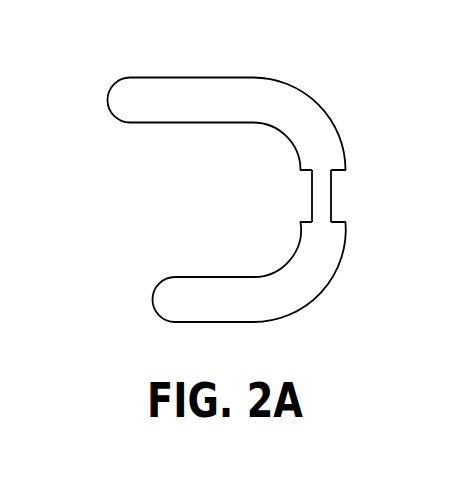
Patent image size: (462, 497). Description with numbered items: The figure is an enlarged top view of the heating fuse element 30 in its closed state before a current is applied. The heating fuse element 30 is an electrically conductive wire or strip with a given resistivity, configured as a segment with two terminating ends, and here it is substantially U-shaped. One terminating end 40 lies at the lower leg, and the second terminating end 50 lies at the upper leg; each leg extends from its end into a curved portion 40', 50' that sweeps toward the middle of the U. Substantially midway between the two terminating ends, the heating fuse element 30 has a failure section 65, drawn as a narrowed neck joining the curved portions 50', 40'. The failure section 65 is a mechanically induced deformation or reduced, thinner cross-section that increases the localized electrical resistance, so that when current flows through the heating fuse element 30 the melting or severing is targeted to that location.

The heating fuse element 30 is at (223, 181).
The second terminating end 50 is at (175, 125).
The upper arm curved portion 50' is at (294, 99).
The failure section 65 is at (332, 193).
The terminating end 40 is at (174, 304).
The lower arm curved portion 40' is at (310, 278).